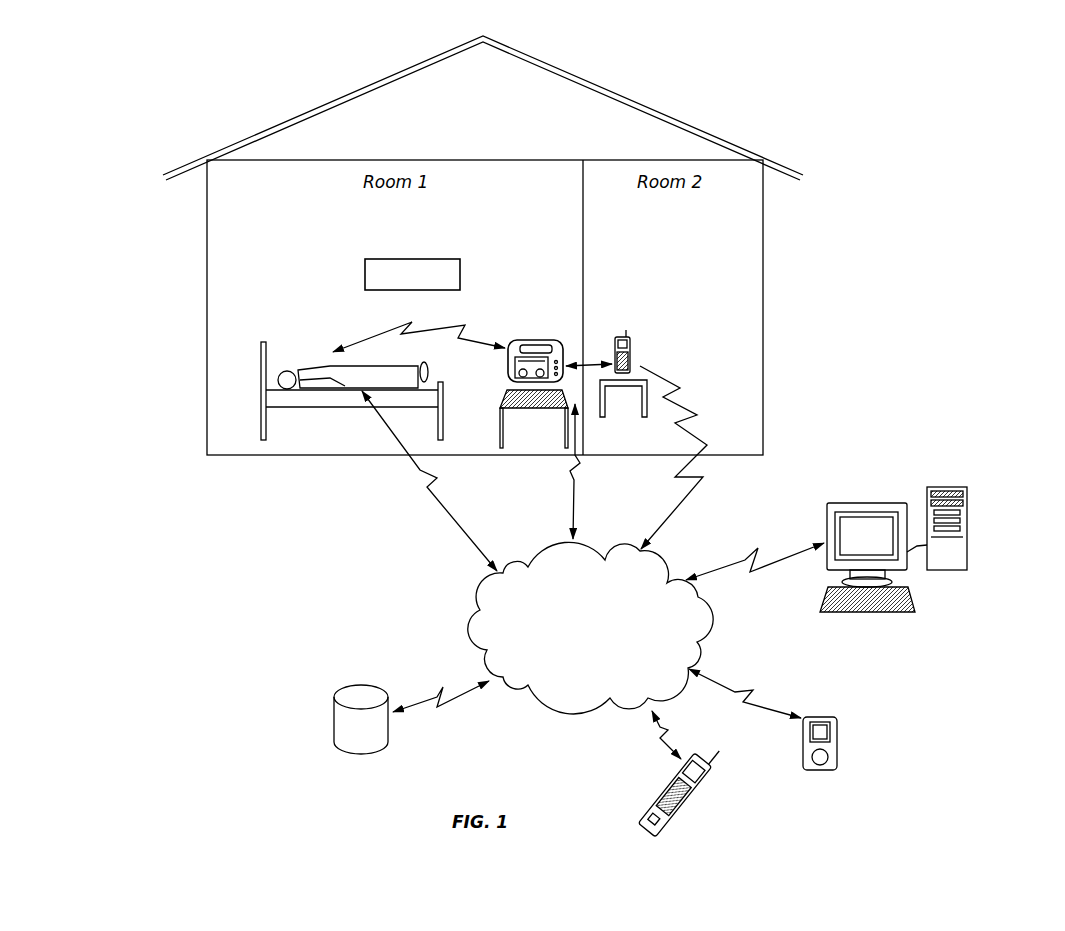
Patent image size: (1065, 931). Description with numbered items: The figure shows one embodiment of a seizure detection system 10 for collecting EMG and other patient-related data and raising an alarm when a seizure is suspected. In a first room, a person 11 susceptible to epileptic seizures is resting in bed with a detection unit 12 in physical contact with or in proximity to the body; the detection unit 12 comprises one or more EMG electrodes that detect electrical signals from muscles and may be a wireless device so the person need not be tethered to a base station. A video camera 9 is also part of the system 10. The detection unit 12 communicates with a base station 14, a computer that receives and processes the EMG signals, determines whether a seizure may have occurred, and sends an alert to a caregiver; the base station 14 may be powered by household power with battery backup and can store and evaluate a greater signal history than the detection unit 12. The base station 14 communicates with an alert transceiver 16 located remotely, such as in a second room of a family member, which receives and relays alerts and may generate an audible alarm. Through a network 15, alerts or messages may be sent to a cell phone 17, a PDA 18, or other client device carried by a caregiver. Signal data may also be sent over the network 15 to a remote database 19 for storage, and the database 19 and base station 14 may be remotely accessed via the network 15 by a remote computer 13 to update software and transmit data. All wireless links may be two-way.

The video camera 9 is at (376, 240).
The seizure detection system 10 is at (249, 673).
The person 11 is at (286, 326).
The detection unit 12 is at (295, 374).
The remote computer 13 is at (970, 520).
The base station 14 is at (535, 338).
The network 15 is at (602, 638).
The alert transceiver 16 is at (636, 346).
The cell phone 17 is at (690, 818).
The PDA 18 is at (838, 745).
The storage database 19 is at (334, 723).